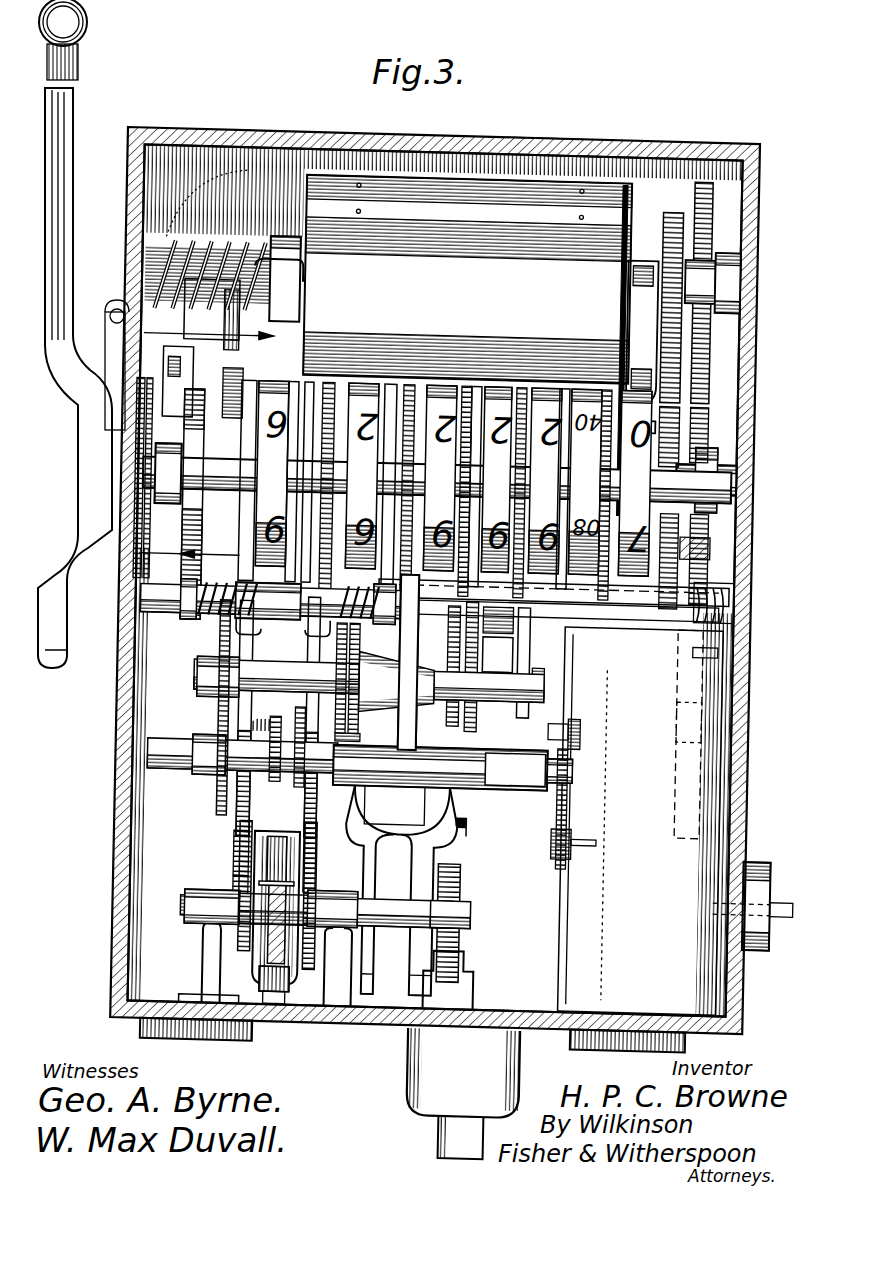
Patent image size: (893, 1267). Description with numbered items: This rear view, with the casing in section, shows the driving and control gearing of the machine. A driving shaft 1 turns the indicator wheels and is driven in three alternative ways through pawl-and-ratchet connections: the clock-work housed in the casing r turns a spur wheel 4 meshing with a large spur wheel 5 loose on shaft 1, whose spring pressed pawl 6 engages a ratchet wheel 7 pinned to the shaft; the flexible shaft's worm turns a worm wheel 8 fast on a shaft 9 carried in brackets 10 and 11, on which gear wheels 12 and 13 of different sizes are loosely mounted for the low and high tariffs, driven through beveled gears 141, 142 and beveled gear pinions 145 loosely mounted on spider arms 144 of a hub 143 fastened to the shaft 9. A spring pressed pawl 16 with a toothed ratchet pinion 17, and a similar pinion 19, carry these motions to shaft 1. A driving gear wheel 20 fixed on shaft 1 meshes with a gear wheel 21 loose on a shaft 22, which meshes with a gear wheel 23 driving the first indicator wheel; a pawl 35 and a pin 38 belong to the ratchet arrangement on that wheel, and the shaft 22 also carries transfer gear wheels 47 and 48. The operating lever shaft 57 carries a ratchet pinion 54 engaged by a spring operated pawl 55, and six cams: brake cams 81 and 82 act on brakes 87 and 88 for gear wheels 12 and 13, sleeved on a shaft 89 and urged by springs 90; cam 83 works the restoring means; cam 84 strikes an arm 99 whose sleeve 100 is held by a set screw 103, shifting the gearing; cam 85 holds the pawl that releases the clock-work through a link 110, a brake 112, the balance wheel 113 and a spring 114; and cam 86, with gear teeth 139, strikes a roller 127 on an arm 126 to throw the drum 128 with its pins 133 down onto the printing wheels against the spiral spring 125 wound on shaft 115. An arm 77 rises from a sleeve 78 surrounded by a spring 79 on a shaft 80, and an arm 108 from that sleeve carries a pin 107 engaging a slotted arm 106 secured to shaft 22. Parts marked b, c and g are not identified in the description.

The casing frame b is at (538, 129).
The link c is at (112, 356).
The knob g is at (600, 1010).
The casing r is at (616, 835).
The driving shaft 1 is at (453, 773).
The spur wheel 4 is at (546, 837).
The large spur wheel 5 is at (558, 731).
The spring pressed pawl 6 is at (530, 728).
The ratchet wheel 7 is at (568, 809).
The worm wheel 8 is at (344, 934).
The shaft 9 is at (318, 775).
The bracket 10 is at (202, 945).
The bracket 11 is at (346, 948).
The gear wheel 12 is at (213, 885).
The gear wheel 13 is at (330, 896).
The spring pressed pawl 16 is at (279, 740).
The toothed ratchet pinion 17 is at (242, 752).
The pinion 19 is at (325, 717).
The driving gear wheel 20 is at (201, 707).
The gear wheel 21 is at (197, 676).
The shaft 22 is at (369, 673).
The gear wheel 23 is at (222, 317).
The pawl 35 is at (210, 397).
The pin 38 is at (195, 382).
The gear wheel 47 is at (360, 726).
The gear wheel 48 is at (385, 679).
The ratchet pinion 54 is at (382, 484).
The spring operated pawl 55 is at (105, 408).
The shaft 57 is at (145, 502).
The arm 77 is at (737, 548).
The sleeve 78 is at (641, 821).
The spring 79 is at (742, 604).
The shaft 80 is at (480, 667).
The cam 81 is at (295, 447).
The cam 82 is at (350, 454).
The cam 83 is at (420, 455).
The cam 84 is at (493, 456).
The cam 85 is at (729, 348).
The cam 86 is at (590, 461).
The brake 87 is at (220, 847).
The brake 88 is at (325, 857).
The shaft 89 is at (235, 635).
The springs 90 is at (284, 620).
The arm 99 is at (422, 663).
The sleeve 100 is at (402, 784).
The set screw 103 is at (487, 838).
The arm 106 is at (530, 683).
The pin 107 is at (534, 663).
The arm 108 is at (558, 619).
The link 110 is at (553, 608).
The brake 112 is at (656, 733).
The balance wheel 113 is at (658, 737).
The spring 114 is at (743, 643).
The shaft 115 is at (279, 269).
The spiral spring 125 is at (207, 255).
The arm 126 is at (589, 349).
The roller 127 is at (606, 346).
The drum 128 is at (467, 279).
The pins 133 is at (468, 244).
The gear teeth 139 is at (729, 509).
The beveled gear 141 is at (216, 868).
The beveled gear 142 is at (268, 718).
The hub 143 is at (242, 977).
The spider arms 144 is at (324, 967).
The beveled gear pinions 145 is at (282, 944).